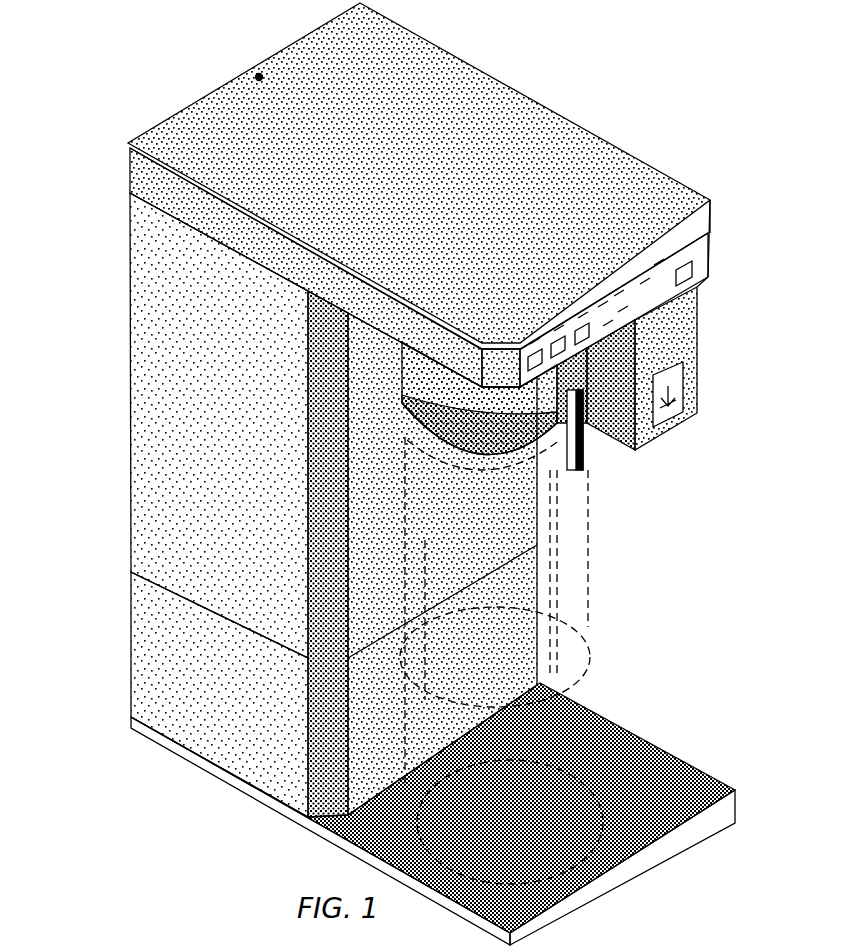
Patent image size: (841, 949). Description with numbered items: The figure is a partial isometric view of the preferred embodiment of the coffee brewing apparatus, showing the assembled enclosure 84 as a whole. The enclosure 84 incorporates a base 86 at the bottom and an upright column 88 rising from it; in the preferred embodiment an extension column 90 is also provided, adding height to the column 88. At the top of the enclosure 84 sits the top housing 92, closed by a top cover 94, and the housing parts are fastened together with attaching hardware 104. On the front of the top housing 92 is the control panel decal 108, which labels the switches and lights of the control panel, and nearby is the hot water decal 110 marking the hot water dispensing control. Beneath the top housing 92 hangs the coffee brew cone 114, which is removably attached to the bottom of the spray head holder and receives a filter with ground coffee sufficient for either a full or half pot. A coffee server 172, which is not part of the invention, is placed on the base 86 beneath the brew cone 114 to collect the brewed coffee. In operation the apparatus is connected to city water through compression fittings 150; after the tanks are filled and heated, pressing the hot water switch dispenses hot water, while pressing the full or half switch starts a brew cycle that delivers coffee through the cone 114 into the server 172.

The enclosure 84 is at (637, 157).
The base 86 is at (632, 737).
The column 88 is at (130, 428).
The extension column 90 is at (133, 662).
The top housing 92 is at (150, 207).
The top cover 94 is at (180, 133).
The attaching hardware 104 is at (259, 73).
The control panel decal 108 is at (700, 255).
The hot water decal 110 is at (678, 388).
The coffee brew cone 114 is at (583, 457).
The coffee server 172 is at (590, 622).
The compression fittings 150 is at (726, 942).